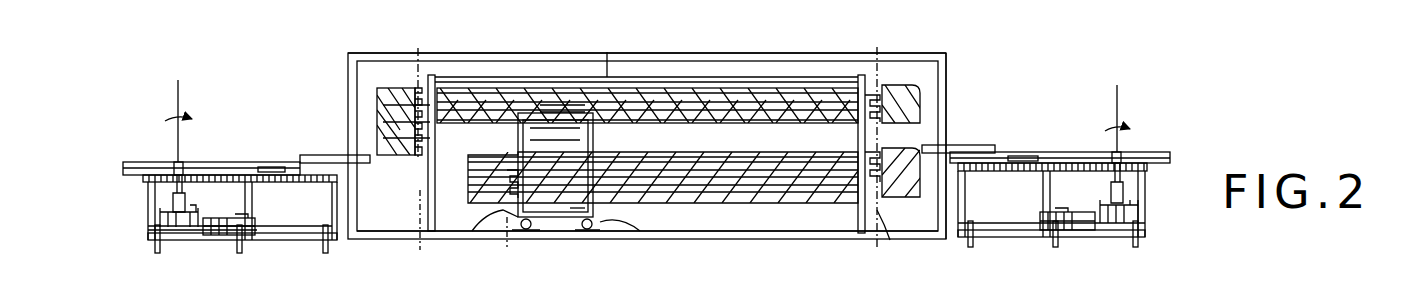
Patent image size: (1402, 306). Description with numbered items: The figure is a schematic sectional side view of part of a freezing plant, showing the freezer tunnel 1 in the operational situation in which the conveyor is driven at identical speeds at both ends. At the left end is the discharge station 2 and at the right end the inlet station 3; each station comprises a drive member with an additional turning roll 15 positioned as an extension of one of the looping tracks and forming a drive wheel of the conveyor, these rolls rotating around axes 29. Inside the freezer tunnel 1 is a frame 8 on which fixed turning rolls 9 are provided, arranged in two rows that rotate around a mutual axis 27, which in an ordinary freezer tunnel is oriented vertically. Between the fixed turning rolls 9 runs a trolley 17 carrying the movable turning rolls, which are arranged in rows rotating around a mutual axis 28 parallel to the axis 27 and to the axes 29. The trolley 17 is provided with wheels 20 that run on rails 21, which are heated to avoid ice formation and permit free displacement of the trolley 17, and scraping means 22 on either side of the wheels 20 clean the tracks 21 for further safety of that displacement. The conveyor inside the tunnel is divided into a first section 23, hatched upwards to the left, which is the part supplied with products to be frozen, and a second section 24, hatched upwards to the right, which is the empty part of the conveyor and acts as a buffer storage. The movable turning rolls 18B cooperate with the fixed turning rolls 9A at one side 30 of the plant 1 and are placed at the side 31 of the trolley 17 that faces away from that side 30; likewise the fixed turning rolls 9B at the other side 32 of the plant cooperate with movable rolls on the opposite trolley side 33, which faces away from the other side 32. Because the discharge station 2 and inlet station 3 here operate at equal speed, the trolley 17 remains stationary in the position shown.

The freezer tunnel 1 is at (1045, 72).
The discharge station 2 is at (227, 137).
The inlet station 3 is at (1078, 138).
The frame 8 is at (710, 76).
The fixed turning rolls 9 is at (412, 82).
The fixed turning rolls 9A is at (412, 150).
The fixed turning rolls 9B is at (880, 178).
The additional turning roll 15 is at (175, 172).
The trolley 17 is at (575, 208).
The movable turning rolls 18B is at (640, 86).
The wheels 20 is at (531, 229).
The rails 21 is at (763, 230).
The scraping means 22 is at (503, 212).
The first section 23 is at (760, 90).
The second section 24 is at (770, 187).
The axis 27 is at (420, 220).
The axis 28 is at (607, 62).
The axes 29 is at (177, 97).
The one side 30 is at (377, 80).
The side 31 is at (570, 120).
The other side 32 is at (958, 64).
The side 33 is at (545, 110).